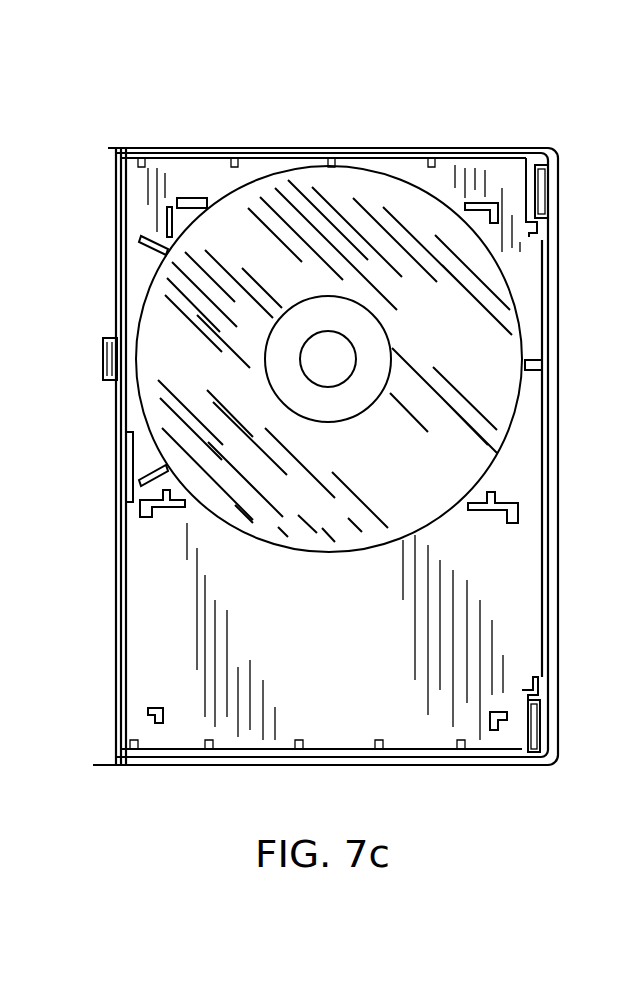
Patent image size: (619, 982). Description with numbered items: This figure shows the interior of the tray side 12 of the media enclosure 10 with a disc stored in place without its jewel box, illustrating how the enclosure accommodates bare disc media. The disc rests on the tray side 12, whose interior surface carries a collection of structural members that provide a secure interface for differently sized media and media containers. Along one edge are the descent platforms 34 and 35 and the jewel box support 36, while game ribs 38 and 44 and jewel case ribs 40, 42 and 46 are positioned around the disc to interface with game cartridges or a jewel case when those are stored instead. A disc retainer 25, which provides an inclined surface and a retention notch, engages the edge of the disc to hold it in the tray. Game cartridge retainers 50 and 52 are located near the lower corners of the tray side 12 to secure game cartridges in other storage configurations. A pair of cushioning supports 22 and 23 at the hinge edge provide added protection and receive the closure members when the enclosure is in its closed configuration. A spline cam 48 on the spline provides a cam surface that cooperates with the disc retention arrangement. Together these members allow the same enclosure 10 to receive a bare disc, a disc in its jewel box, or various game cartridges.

The media enclosure 10 is at (347, 138).
The tray side 12 is at (346, 618).
The cushioning support 22 is at (543, 192).
The cushioning support 23 is at (533, 725).
The disc retainer 25 is at (535, 362).
The descent platform 34 is at (152, 264).
The descent platform 35 is at (152, 466).
The jewel box support 36 is at (127, 484).
The game rib 38 is at (158, 517).
The jewel case rib 40 is at (162, 208).
The jewel case rib 42 is at (205, 198).
The game rib 44 is at (500, 512).
The jewel case rib 46 is at (472, 203).
The spline cam 48 is at (103, 360).
The game cartridge retainer 50 is at (495, 727).
The game cartridge retainer 52 is at (152, 722).